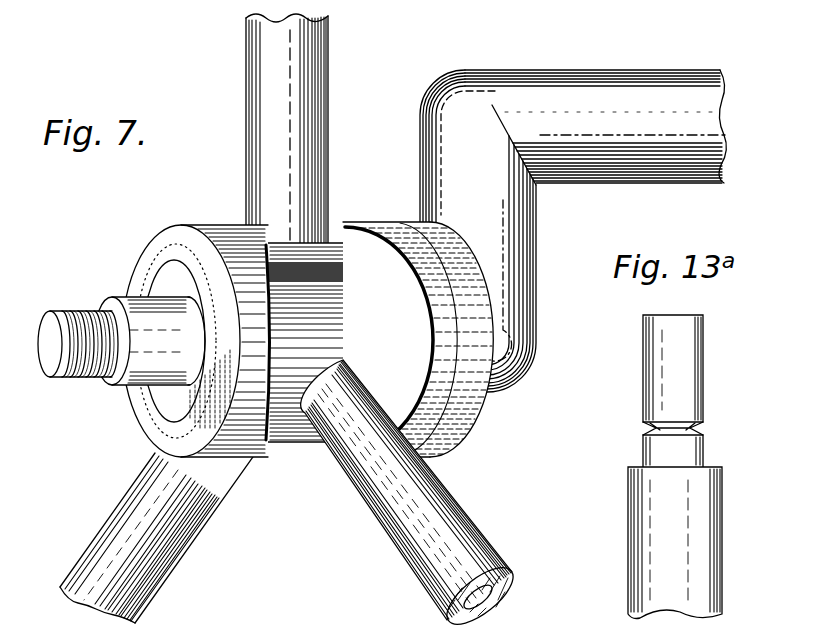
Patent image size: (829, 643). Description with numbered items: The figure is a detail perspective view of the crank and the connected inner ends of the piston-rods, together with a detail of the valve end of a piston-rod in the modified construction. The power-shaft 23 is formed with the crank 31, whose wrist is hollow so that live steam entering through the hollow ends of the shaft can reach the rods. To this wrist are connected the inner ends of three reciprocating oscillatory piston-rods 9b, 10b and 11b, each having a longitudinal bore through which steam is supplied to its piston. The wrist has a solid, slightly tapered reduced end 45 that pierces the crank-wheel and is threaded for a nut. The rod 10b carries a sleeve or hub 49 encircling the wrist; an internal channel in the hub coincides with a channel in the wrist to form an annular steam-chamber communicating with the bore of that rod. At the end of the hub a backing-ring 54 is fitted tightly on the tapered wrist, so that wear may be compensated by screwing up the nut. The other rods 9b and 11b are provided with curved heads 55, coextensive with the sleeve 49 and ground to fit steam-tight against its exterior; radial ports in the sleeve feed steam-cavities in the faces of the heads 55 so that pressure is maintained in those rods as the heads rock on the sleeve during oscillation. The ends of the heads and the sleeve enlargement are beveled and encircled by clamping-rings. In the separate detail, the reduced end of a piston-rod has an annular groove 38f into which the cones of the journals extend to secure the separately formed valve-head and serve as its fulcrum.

In FIG. 7, the piston-rod 9b is at (373, 96).
In FIG. 7, the piston-rod 10b is at (246, 552).
In FIG. 7, the piston-rod 11b is at (526, 490).
In FIG. 7, the power-shaft 23 is at (497, 70).
In FIG. 7, the crank 31 is at (539, 290).
In FIG. 7, the reduced end 45 is at (130, 388).
In FIG. 7, the sleeve or hub 49 is at (167, 400).
In FIG. 7, the backing-ring 54 is at (396, 335).
In FIG. 7, the curved head 55 is at (341, 243).
In FIG. 13A, the annular groove 38f is at (748, 420).